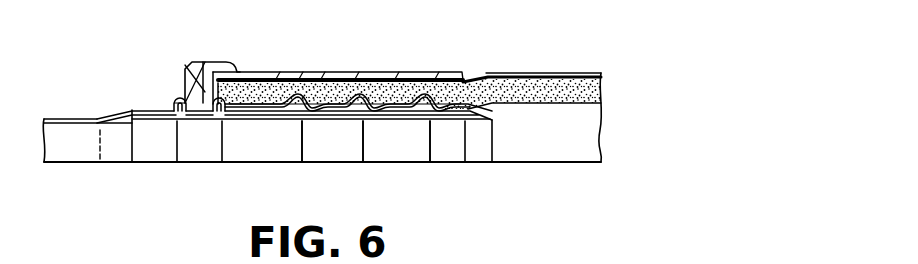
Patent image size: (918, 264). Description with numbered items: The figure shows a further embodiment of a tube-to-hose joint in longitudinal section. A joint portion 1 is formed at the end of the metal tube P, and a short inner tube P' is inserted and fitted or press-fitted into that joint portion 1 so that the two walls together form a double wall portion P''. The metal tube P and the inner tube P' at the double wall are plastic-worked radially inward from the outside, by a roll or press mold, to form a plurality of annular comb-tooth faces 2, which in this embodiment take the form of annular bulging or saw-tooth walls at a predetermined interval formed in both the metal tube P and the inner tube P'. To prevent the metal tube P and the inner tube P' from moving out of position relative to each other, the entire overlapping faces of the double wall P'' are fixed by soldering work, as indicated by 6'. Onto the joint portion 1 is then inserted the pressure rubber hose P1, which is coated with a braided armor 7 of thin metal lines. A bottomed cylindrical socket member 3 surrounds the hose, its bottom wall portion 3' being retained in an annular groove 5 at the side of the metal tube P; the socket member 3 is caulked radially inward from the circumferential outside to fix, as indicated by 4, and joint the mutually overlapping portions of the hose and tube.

The metal tube P is at (87, 111).
The annular groove 5 is at (185, 103).
The bottom wall portion 3' is at (211, 60).
The bottomed cylindrical socket member 3 is at (338, 48).
The fixing by caulking 4 is at (290, 84).
The annular comb-tooth faces 2 is at (322, 100).
The double wall portion P'' is at (358, 64).
The joint portion 1 is at (396, 110).
The pressure rubber hose P1 is at (537, 78).
The braided armor 7 is at (591, 76).
The short inner tube P' is at (322, 137).
The soldering fixing 6' is at (366, 166).